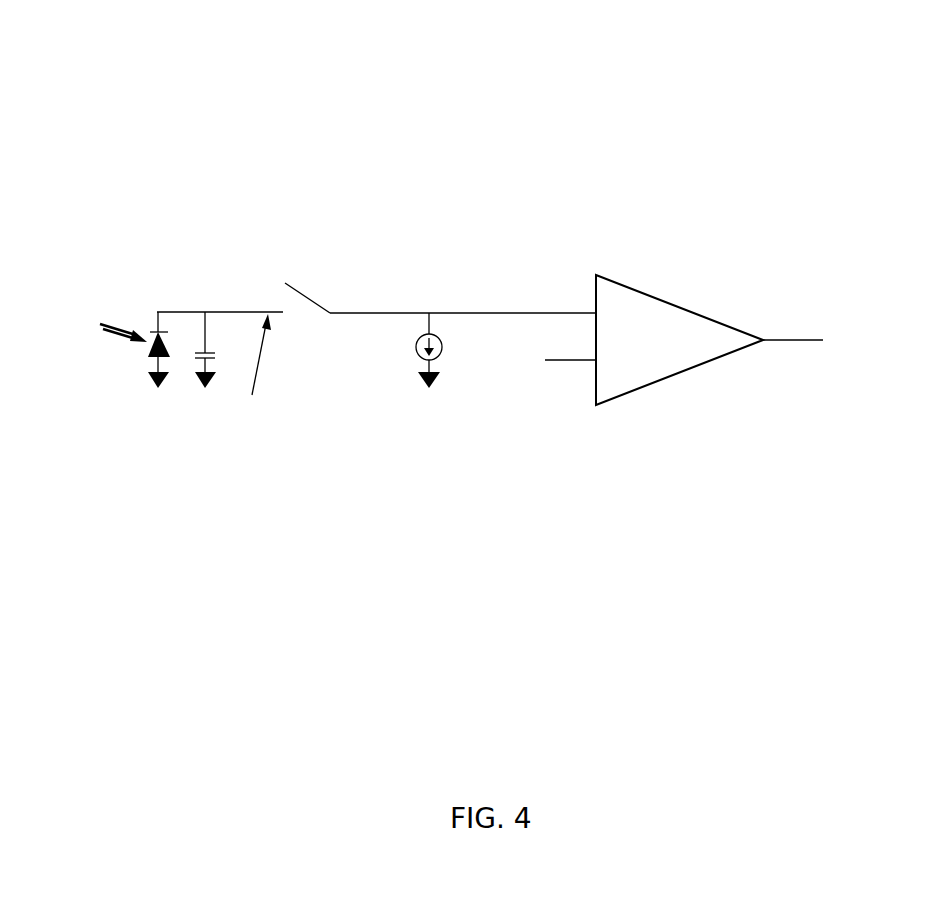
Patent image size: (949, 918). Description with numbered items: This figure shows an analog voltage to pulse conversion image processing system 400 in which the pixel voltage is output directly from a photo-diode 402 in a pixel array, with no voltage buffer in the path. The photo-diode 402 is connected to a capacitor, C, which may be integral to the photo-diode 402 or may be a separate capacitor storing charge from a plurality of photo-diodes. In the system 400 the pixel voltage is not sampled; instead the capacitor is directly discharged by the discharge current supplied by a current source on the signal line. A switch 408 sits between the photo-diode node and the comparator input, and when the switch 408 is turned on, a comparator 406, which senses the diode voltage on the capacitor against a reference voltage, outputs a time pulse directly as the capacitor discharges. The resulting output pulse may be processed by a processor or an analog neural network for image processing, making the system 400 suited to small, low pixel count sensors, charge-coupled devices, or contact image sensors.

The analog voltage to pulse conversion image processing system 400 is at (410, 82).
The photo-diode 402 is at (152, 328).
The comparator 406 is at (688, 305).
The switch 408 is at (298, 292).